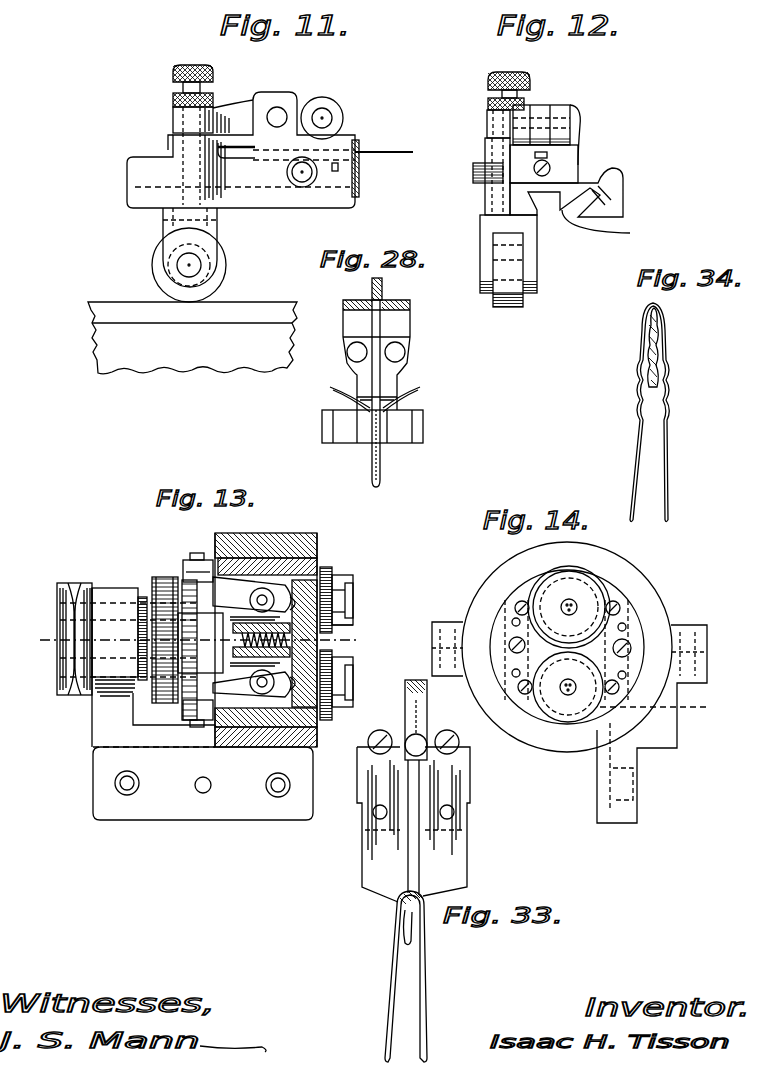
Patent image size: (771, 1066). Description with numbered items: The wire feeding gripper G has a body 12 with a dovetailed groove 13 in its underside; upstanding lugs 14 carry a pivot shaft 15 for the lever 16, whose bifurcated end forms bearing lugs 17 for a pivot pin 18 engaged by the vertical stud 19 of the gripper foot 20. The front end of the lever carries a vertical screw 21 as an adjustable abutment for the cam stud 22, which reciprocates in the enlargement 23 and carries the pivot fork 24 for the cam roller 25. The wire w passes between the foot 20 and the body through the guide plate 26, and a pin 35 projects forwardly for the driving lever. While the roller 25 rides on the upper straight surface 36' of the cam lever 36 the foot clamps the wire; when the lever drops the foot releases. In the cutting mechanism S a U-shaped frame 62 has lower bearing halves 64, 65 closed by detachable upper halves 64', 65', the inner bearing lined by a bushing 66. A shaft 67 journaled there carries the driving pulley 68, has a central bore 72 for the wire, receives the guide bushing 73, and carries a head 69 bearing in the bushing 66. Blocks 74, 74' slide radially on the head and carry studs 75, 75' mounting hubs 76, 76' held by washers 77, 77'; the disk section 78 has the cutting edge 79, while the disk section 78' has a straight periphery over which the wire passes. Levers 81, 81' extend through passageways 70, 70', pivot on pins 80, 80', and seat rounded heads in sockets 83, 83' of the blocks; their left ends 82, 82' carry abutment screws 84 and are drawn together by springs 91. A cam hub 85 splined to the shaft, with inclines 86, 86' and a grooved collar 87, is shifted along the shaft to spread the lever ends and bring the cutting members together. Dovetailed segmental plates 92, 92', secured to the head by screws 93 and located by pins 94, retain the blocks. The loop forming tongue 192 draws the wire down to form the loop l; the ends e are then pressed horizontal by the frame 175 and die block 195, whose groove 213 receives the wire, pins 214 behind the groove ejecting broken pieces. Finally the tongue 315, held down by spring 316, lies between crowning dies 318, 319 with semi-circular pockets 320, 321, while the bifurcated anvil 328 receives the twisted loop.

In FIG. 11, the thumb screw 21 is at (183, 89).
In FIG. 12, the thumb screw 21 is at (488, 89).
In FIG. 11, the arm 16 is at (231, 110).
In FIG. 12, the arm 16 is at (542, 137).
In FIG. 11, the body 17 is at (241, 150).
In FIG. 12, the body 17 is at (527, 113).
In FIG. 11, the lug 15 is at (279, 107).
In FIG. 12, the lug 15 is at (580, 116).
In FIG. 11, the roller 14 is at (311, 103).
In FIG. 11, the pin 18 is at (324, 118).
In FIG. 11, the plate 19 is at (345, 134).
In FIG. 11, the guide 20 is at (348, 141).
In FIG. 11, the wire w is at (384, 144).
In FIG. 11, the shoulder 22 is at (173, 140).
In FIG. 11, the extension 23 is at (128, 165).
In FIG. 12, the extension 23 is at (486, 196).
In FIG. 11, the hole 35 is at (312, 176).
In FIG. 12, the hole 35 is at (473, 176).
In FIG. 11, the plate 26 is at (360, 170).
In FIG. 12, the plate 26 is at (530, 166).
In FIG. 11, the gauge G is at (308, 226).
In FIG. 12, the gauge G is at (596, 231).
In FIG. 11, the fork 24 is at (210, 255).
In FIG. 12, the fork 24 is at (490, 240).
In FIG. 11, the roller 25 is at (222, 276).
In FIG. 12, the roller 25 is at (526, 300).
In FIG. 11, the work plate 36 is at (192, 338).
In FIG. 11, the surface 36' is at (256, 292).
In FIG. 12, the arm 12 is at (576, 170).
In FIG. 12, the hook 13 is at (653, 236).
In FIG. 28, the needle l is at (385, 473).
In FIG. 28, the needle bar 192 is at (382, 329).
In FIG. 28, the holes 175 is at (343, 357).
In FIG. 28, the spring 195 is at (338, 387).
In FIG. 28, the spring 213 is at (420, 392).
In FIG. 28, the spring end e is at (389, 389).
In FIG. 28, the clamp block 214 is at (348, 404).
In FIG. 34, the hairpin spring 78 is at (649, 423).
In FIG. 14, the hairpin spring 78 is at (591, 590).
In FIG. 13, the pulley 68 is at (60, 606).
In FIG. 13, the belt groove 72 is at (62, 642).
In FIG. 13, the hub 64' is at (118, 629).
In FIG. 13, the shaft 64 is at (187, 667).
In FIG. 13, the gear 67 is at (145, 698).
In FIG. 13, the gear 87 is at (166, 590).
In FIG. 13, the rack 91 is at (178, 650).
In FIG. 13, the bracket 84 is at (197, 560).
In FIG. 13, the bracket 82 is at (198, 727).
In FIG. 13, the screw 85 is at (171, 705).
In FIG. 13, the block 86 is at (234, 640).
In FIG. 13, the block 86' is at (214, 651).
In FIG. 13, the housing 70 is at (266, 630).
In FIG. 13, the wall 65' is at (321, 611).
In FIG. 14, the wall 65' is at (581, 635).
In FIG. 13, the casing 66 is at (318, 556).
In FIG. 14, the casing 66 is at (642, 592).
In FIG. 13, the base 65 is at (283, 730).
In FIG. 14, the base 65 is at (566, 691).
In FIG. 13, the flange 69 is at (316, 749).
In FIG. 13, the arm 81 is at (252, 598).
In FIG. 13, the pin 80 is at (262, 594).
In FIG. 13, the lug 83 is at (285, 610).
In FIG. 13, the arm 81' is at (252, 680).
In FIG. 13, the pin 80' is at (262, 691).
In FIG. 13, the lug 83' is at (286, 693).
In FIG. 13, the bracket 82' is at (200, 740).
In FIG. 13, the collar 92' is at (348, 588).
In FIG. 14, the collar 92' is at (668, 612).
In FIG. 13, the bearing 75 is at (365, 592).
In FIG. 13, the cap 74 is at (358, 594).
In FIG. 13, the ring 79 is at (345, 591).
In FIG. 13, the sleeve 76 is at (360, 608).
In FIG. 13, the nut 77 is at (360, 623).
In FIG. 13, the collar 73 is at (334, 652).
In FIG. 14, the collar 73 is at (631, 651).
In FIG. 13, the nut 77' is at (354, 681).
In FIG. 13, the cap 74' is at (370, 682).
In FIG. 13, the sleeve 76' is at (357, 698).
In FIG. 13, the bearing 75' is at (368, 710).
In FIG. 13, the roller 78' is at (352, 723).
In FIG. 14, the roller 78' is at (559, 712).
In FIG. 13, the base line 70' is at (170, 759).
In FIG. 13, the base plate 62 is at (247, 810).
In FIG. 14, the base plate 62 is at (637, 821).
In FIG. 13, the shaft S is at (264, 527).
In FIG. 14, the holes 94 is at (513, 621).
In FIG. 14, the screws 92 is at (481, 672).
In FIG. 14, the screws 93 is at (520, 694).
In FIG. 33, the plate 315 is at (424, 786).
In FIG. 33, the screws 316 is at (427, 716).
In FIG. 33, the edge 319 is at (460, 890).
In FIG. 33, the edge 321 is at (450, 893).
In FIG. 33, the edge 318 is at (362, 887).
In FIG. 33, the edge 320 is at (395, 900).
In FIG. 33, the needle 328 is at (400, 912).